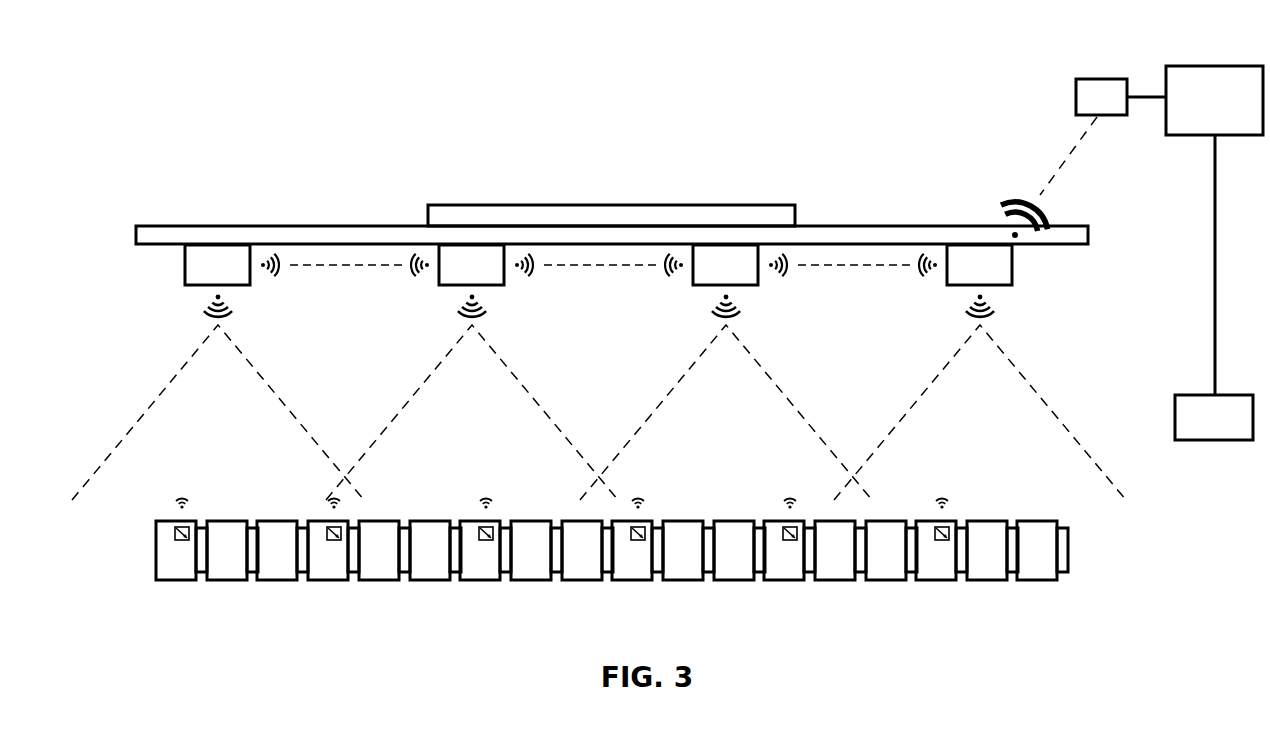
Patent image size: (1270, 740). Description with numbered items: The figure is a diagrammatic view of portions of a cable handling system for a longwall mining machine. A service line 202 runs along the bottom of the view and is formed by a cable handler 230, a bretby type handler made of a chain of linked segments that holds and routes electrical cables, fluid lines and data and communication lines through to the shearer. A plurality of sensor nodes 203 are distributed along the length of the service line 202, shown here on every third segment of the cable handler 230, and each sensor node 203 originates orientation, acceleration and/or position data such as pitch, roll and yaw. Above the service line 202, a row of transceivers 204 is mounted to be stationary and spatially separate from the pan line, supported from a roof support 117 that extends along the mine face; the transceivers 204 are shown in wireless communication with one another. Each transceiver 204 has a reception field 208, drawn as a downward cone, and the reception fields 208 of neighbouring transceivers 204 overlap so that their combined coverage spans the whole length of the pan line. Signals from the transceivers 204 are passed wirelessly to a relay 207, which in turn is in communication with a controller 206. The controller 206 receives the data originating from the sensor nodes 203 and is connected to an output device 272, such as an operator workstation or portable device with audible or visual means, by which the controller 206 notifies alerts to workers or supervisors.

The roof support 117 is at (615, 215).
The service line 202 is at (612, 595).
The sensor node 203 is at (985, 502).
The transceiver 204 is at (965, 270).
The controller 206 is at (1202, 82).
The relay 207 is at (1092, 97).
The reception field 208 is at (955, 381).
The cable handler 230 is at (532, 557).
The output device 272 is at (1212, 420).